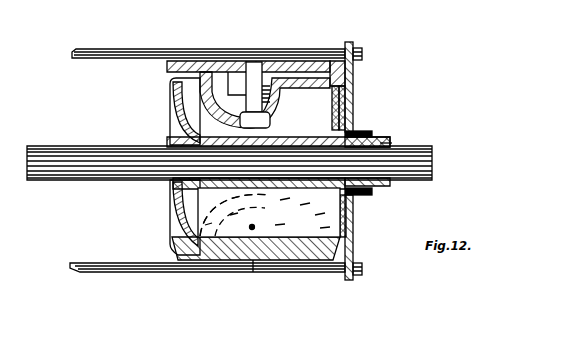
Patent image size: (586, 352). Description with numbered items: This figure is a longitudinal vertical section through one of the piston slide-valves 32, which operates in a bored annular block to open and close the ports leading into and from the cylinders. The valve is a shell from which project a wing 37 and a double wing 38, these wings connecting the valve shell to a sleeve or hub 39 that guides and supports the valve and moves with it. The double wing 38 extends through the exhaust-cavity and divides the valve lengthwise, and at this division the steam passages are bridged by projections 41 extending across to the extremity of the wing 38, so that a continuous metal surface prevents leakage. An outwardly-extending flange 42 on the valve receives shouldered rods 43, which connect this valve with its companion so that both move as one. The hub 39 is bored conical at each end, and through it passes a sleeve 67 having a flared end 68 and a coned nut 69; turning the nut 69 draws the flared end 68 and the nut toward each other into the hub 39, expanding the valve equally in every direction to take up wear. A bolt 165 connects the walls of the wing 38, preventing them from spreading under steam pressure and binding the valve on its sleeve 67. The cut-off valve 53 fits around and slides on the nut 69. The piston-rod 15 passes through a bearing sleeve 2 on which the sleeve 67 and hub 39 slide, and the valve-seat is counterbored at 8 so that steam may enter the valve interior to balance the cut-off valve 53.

The sleeve 2 is at (388, 143).
The counterbore 8 is at (186, 240).
The piston-rod 15 is at (88, 148).
The piston slide-valve 32 is at (283, 92).
The wing 37 is at (255, 120).
The double wing 38 is at (269, 212).
The sleeve or hub 39 is at (320, 134).
The projection 41 is at (297, 268).
The outwardly-extending flange 42 is at (353, 46).
The shouldered rod 43 is at (283, 54).
The cut-off valve 53 is at (348, 97).
The sleeve 67 is at (372, 136).
The flared end 68 is at (232, 193).
The coned nut 69 is at (356, 131).
The bolt 165 is at (253, 274).